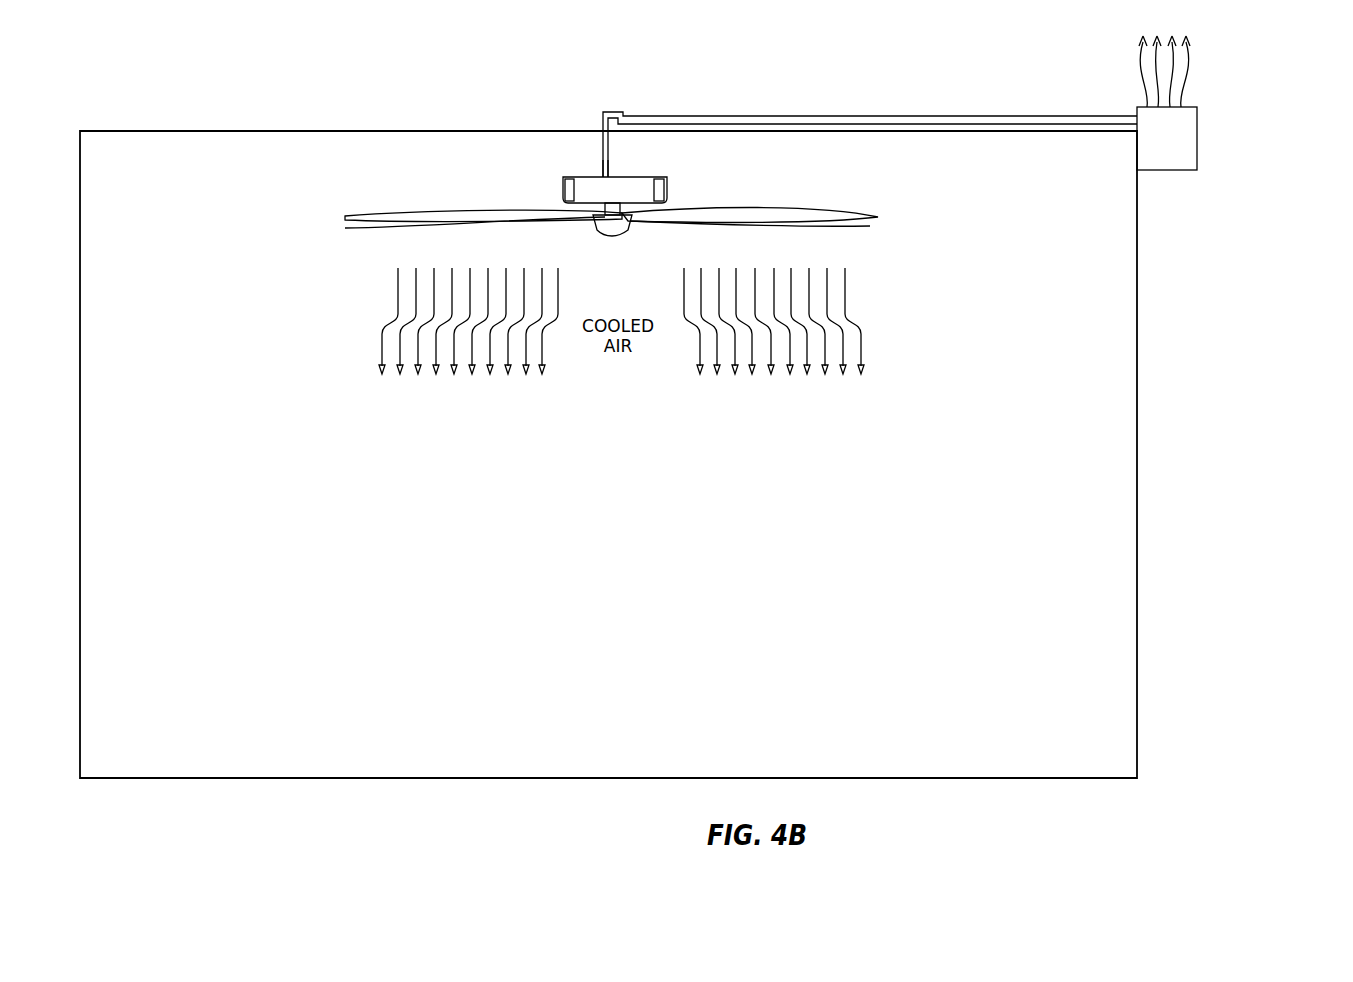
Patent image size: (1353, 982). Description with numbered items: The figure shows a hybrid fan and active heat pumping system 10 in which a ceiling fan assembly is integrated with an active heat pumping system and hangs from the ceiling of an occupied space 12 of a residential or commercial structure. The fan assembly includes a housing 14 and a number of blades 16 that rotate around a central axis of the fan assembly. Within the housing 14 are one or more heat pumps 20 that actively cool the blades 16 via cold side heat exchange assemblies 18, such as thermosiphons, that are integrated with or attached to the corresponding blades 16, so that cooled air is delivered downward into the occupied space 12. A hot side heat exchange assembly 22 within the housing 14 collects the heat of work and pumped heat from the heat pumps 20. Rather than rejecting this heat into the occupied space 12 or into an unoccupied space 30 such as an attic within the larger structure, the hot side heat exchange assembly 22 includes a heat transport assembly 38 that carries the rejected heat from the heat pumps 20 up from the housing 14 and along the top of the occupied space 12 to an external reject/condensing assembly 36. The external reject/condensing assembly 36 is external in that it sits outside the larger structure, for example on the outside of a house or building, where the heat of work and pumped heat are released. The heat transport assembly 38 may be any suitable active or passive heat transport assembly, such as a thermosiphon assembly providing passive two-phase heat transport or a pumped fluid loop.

The hybrid fan and active heat pumping system 10 is at (842, 167).
The occupied space 12 is at (248, 152).
The housing 14 is at (665, 198).
The blades 16 is at (392, 215).
The cold side heat exchange assembly 18 is at (392, 226).
The heat pump 20 is at (568, 193).
The hot side heat exchange assembly 22 is at (578, 177).
The unoccupied space 30 is at (733, 67).
The external reject/condensing assembly 36 is at (1197, 137).
The heat transport assembly 38 is at (793, 116).